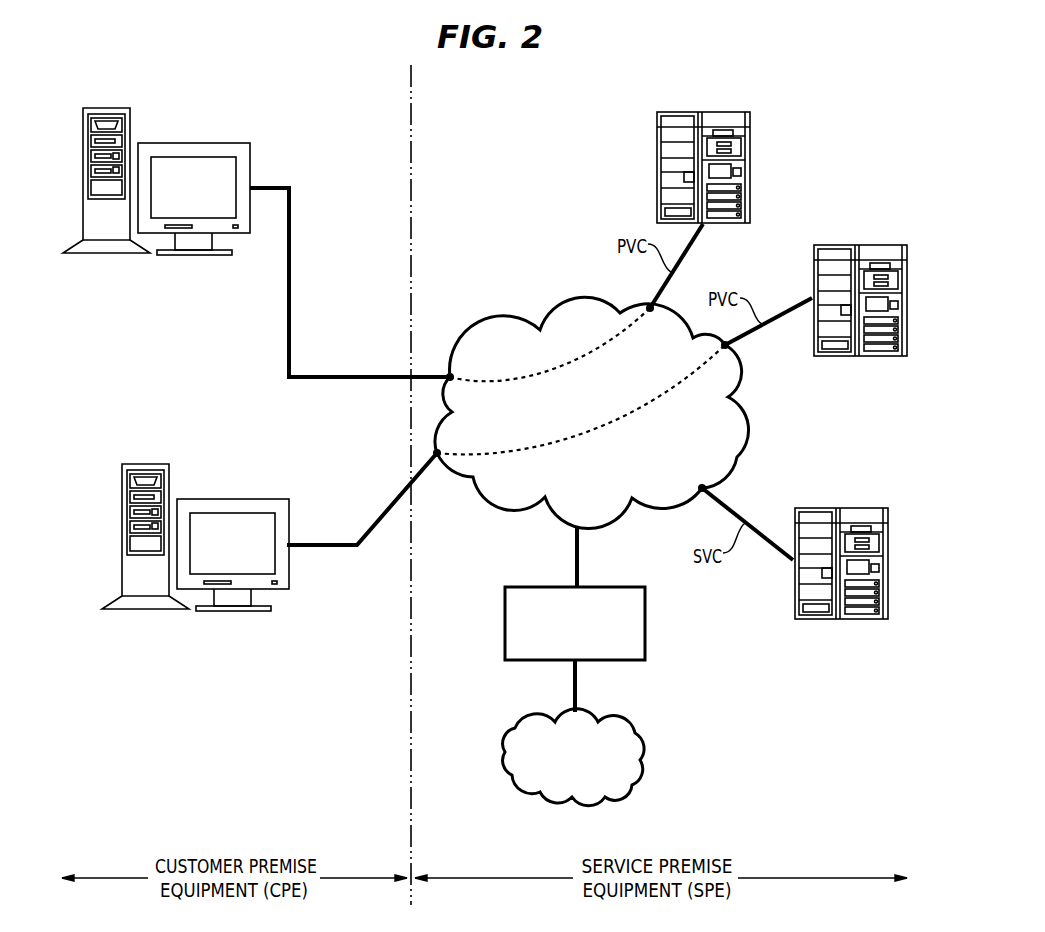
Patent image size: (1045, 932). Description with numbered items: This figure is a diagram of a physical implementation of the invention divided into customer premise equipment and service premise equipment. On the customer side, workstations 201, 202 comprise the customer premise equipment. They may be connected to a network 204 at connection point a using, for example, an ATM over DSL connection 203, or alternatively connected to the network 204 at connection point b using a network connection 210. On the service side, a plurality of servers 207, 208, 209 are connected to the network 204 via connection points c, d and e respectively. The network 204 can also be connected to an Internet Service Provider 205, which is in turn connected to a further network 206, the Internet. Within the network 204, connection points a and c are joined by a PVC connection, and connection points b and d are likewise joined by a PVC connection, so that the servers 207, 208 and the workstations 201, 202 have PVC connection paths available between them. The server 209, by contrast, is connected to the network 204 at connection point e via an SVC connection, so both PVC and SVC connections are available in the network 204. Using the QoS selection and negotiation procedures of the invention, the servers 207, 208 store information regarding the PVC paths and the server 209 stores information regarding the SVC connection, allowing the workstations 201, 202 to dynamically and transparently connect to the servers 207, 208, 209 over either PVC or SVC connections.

The workstation 201 is at (245, 112).
The workstation 202 is at (232, 670).
The ATM over DSL connection 203 is at (315, 379).
The network 204 is at (508, 318).
The Internet Service Provider 205 is at (505, 610).
The network 206 is at (504, 748).
The server 207 is at (752, 148).
The server 208 is at (835, 245).
The server 209 is at (810, 508).
The network connection 210 is at (310, 544).